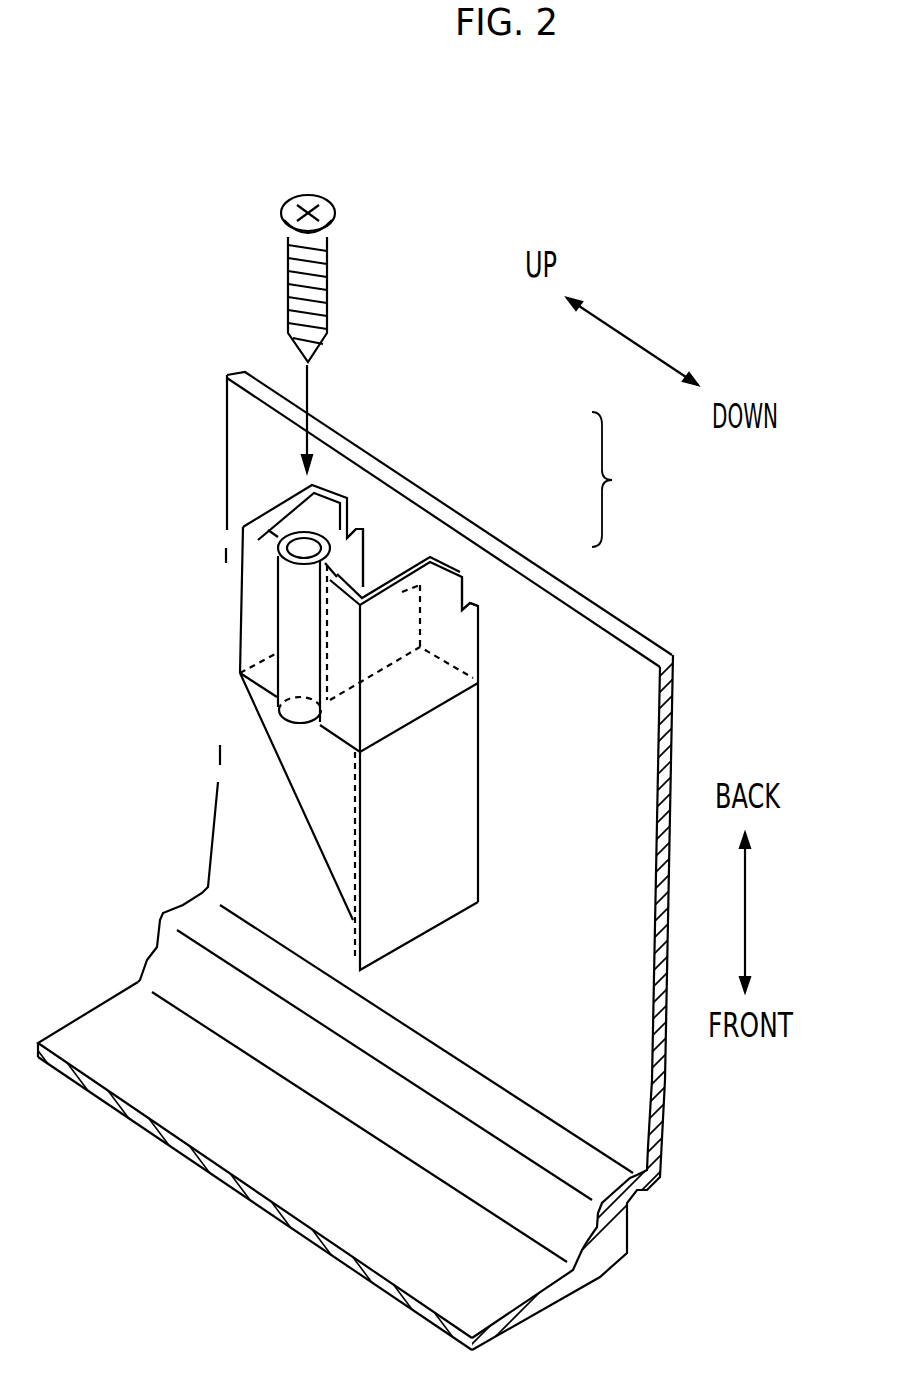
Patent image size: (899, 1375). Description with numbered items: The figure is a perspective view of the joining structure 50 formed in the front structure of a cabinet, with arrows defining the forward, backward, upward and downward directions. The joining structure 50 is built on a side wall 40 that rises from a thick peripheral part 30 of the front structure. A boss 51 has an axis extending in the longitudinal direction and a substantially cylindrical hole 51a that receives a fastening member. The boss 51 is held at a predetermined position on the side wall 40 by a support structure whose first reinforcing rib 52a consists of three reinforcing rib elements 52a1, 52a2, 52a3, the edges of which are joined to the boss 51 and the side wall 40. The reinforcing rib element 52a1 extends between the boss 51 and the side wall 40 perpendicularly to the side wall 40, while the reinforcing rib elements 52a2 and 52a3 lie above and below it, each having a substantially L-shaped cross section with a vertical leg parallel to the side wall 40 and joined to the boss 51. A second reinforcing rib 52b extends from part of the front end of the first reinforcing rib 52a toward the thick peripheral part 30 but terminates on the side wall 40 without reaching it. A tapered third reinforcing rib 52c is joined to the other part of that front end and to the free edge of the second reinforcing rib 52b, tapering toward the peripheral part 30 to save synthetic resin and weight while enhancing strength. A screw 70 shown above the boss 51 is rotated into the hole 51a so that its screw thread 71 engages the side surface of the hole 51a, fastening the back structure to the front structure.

The thick peripheral part 30 is at (350, 1152).
The side wall 40 is at (575, 658).
The joining structure 50 is at (195, 584).
The boss 51 is at (313, 527).
The hole 51a is at (357, 527).
The first reinforcing rib 52a is at (631, 479).
The reinforcing rib element 52a1 is at (420, 585).
The reinforcing rib element 52a2 is at (367, 533).
The reinforcing rib element 52a3 is at (472, 585).
The second reinforcing rib 52b is at (433, 893).
The tapered third reinforcing rib 52c is at (300, 788).
The screw 70 is at (333, 205).
The screw thread 71 is at (327, 282).